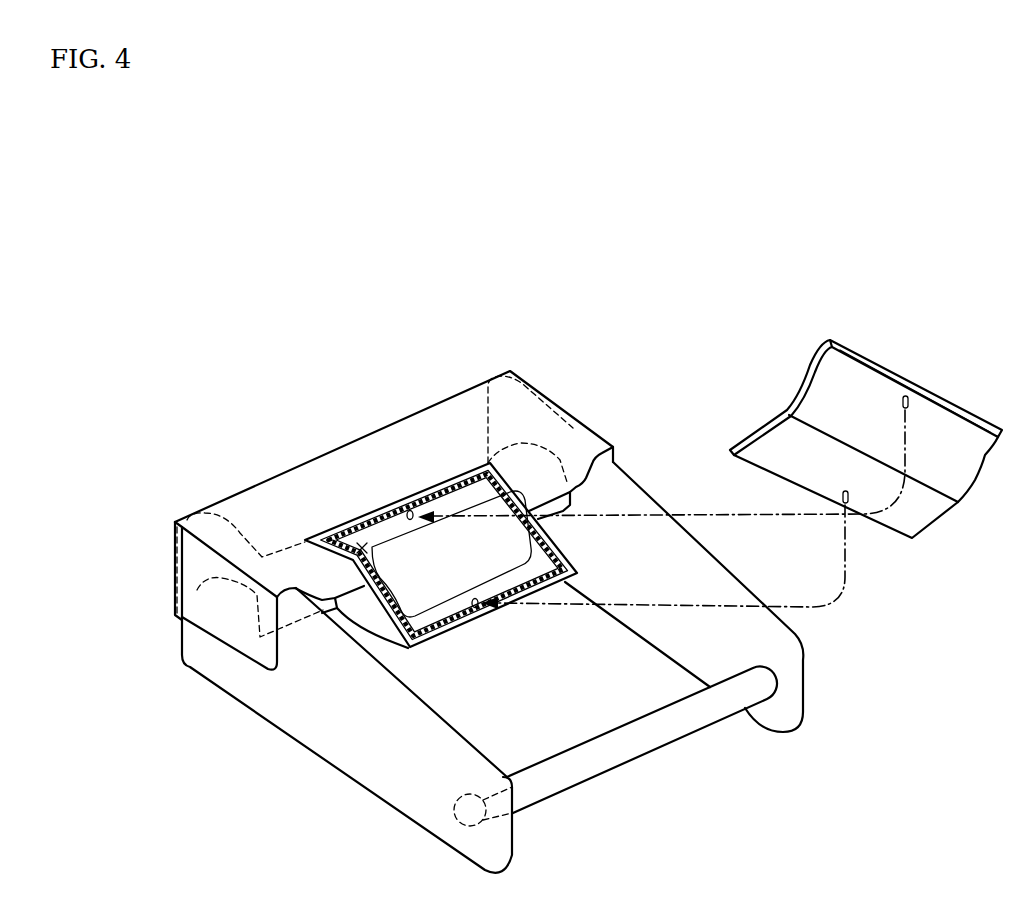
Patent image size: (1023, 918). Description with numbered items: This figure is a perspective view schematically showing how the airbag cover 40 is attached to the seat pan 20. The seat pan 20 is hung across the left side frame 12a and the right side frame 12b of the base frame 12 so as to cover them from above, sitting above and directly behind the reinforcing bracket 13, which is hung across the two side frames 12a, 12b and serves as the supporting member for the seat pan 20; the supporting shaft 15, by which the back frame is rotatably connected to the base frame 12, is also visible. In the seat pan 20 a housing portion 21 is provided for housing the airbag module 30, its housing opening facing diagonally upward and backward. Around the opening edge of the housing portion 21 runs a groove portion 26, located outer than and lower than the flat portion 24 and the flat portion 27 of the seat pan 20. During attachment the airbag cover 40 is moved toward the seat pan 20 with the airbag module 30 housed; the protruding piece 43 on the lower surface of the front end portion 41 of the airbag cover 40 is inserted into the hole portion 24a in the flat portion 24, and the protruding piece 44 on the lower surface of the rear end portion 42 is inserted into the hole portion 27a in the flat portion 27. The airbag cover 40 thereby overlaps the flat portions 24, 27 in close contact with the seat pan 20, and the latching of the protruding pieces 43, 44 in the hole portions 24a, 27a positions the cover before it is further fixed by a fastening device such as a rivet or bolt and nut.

The base frame 12 is at (362, 786).
The left side frame 12a is at (303, 717).
The right side frame 12b is at (622, 497).
The bracket 13 is at (303, 573).
The supporting shaft 15 is at (667, 728).
The seat pan 20 is at (497, 373).
The housing portion 21 is at (352, 546).
The flat portion 24 is at (450, 495).
The hole portion 24a is at (388, 549).
The groove portion 26 is at (455, 623).
The flat portion 27 is at (437, 620).
The hole portion 27a is at (478, 612).
The airbag module 30 is at (360, 545).
The airbag cover 40 is at (819, 349).
The front end portion 41 is at (856, 375).
The rear end portion 42 is at (782, 463).
The protruding piece 43 is at (910, 397).
The protruding piece 44 is at (853, 497).